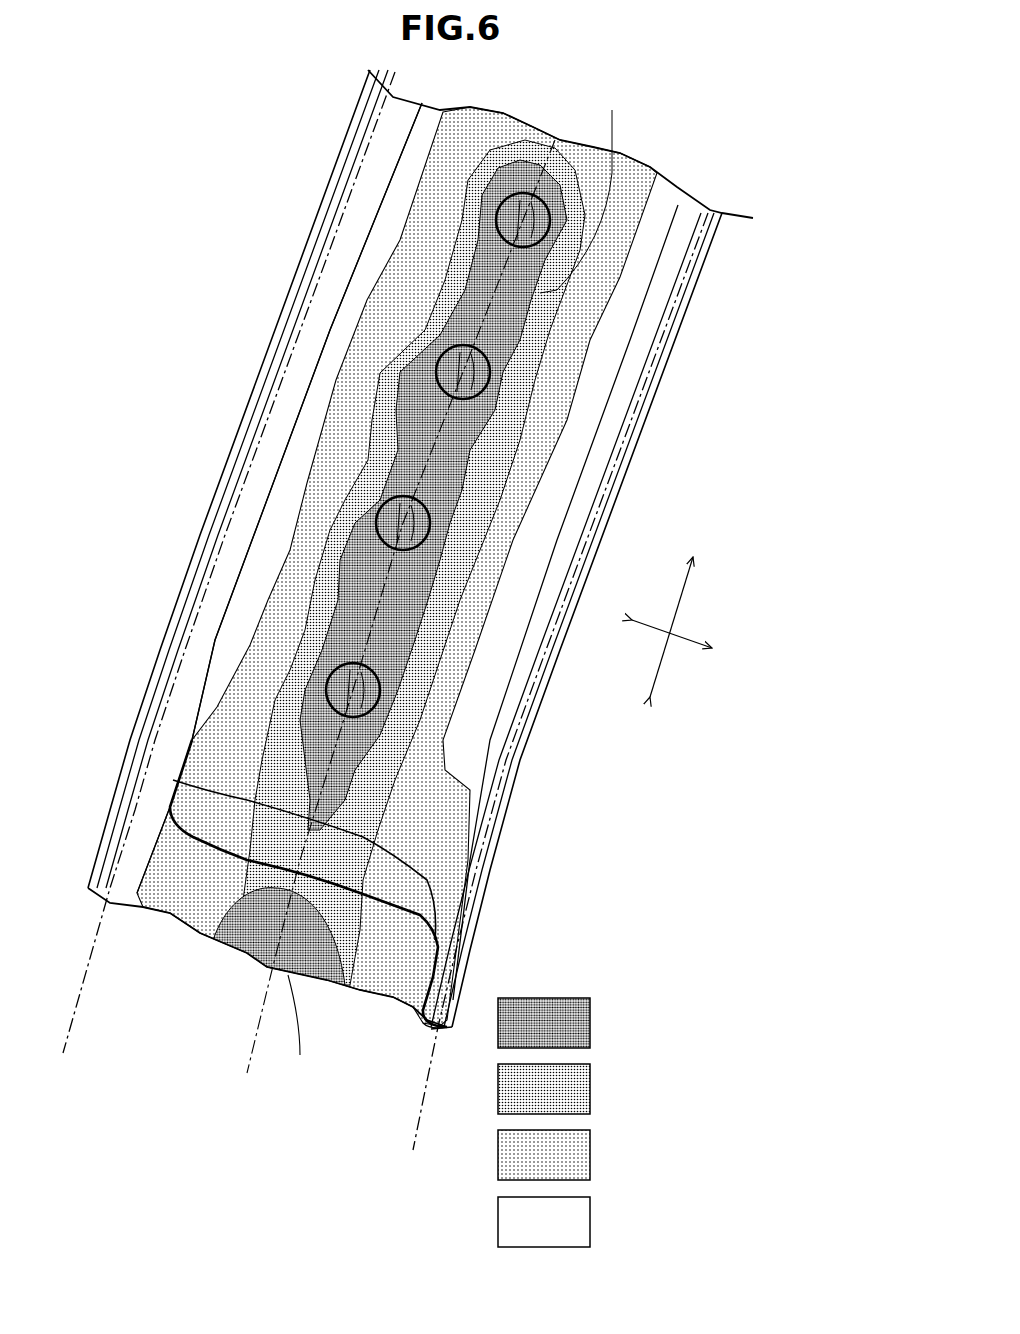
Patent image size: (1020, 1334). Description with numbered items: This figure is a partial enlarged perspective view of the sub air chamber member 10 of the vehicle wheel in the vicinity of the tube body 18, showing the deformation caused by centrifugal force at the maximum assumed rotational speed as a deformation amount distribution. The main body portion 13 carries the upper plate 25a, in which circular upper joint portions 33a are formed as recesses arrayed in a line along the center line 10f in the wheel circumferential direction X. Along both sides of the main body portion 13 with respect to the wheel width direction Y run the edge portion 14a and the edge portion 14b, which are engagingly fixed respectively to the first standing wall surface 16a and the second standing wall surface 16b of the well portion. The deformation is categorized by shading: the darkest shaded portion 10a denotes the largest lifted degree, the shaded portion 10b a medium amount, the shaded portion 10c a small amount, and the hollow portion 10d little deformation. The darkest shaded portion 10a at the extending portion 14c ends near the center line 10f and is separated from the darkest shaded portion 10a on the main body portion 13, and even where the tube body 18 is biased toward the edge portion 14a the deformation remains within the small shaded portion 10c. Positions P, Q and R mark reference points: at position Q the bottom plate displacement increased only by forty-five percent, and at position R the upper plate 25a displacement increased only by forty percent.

The sub air chamber member 10 is at (211, 291).
The shaded portion with largest deformation amount 10a is at (315, 705).
The shaded portion with medium deformation amount 10b is at (395, 772).
The shaded portion with small deformation amount 10c is at (355, 365).
The hollow portion 10d is at (290, 500).
The center line 10f is at (253, 1023).
The main body portion 13 is at (412, 160).
The edge portion 14a is at (663, 374).
The edge portion 14b is at (309, 246).
The extending portion 14c is at (343, 983).
The first standing wall surface 16a is at (427, 1088).
The second standing wall surface 16b is at (73, 1028).
The tube body 18 is at (480, 957).
The upper plate 25a is at (632, 282).
The upper joint portion 33a is at (553, 177).
The position P is at (297, 1027).
The position Q is at (375, 628).
The position R is at (515, 420).
The wheel circumferential direction X is at (677, 615).
The wheel width direction Y is at (681, 640).